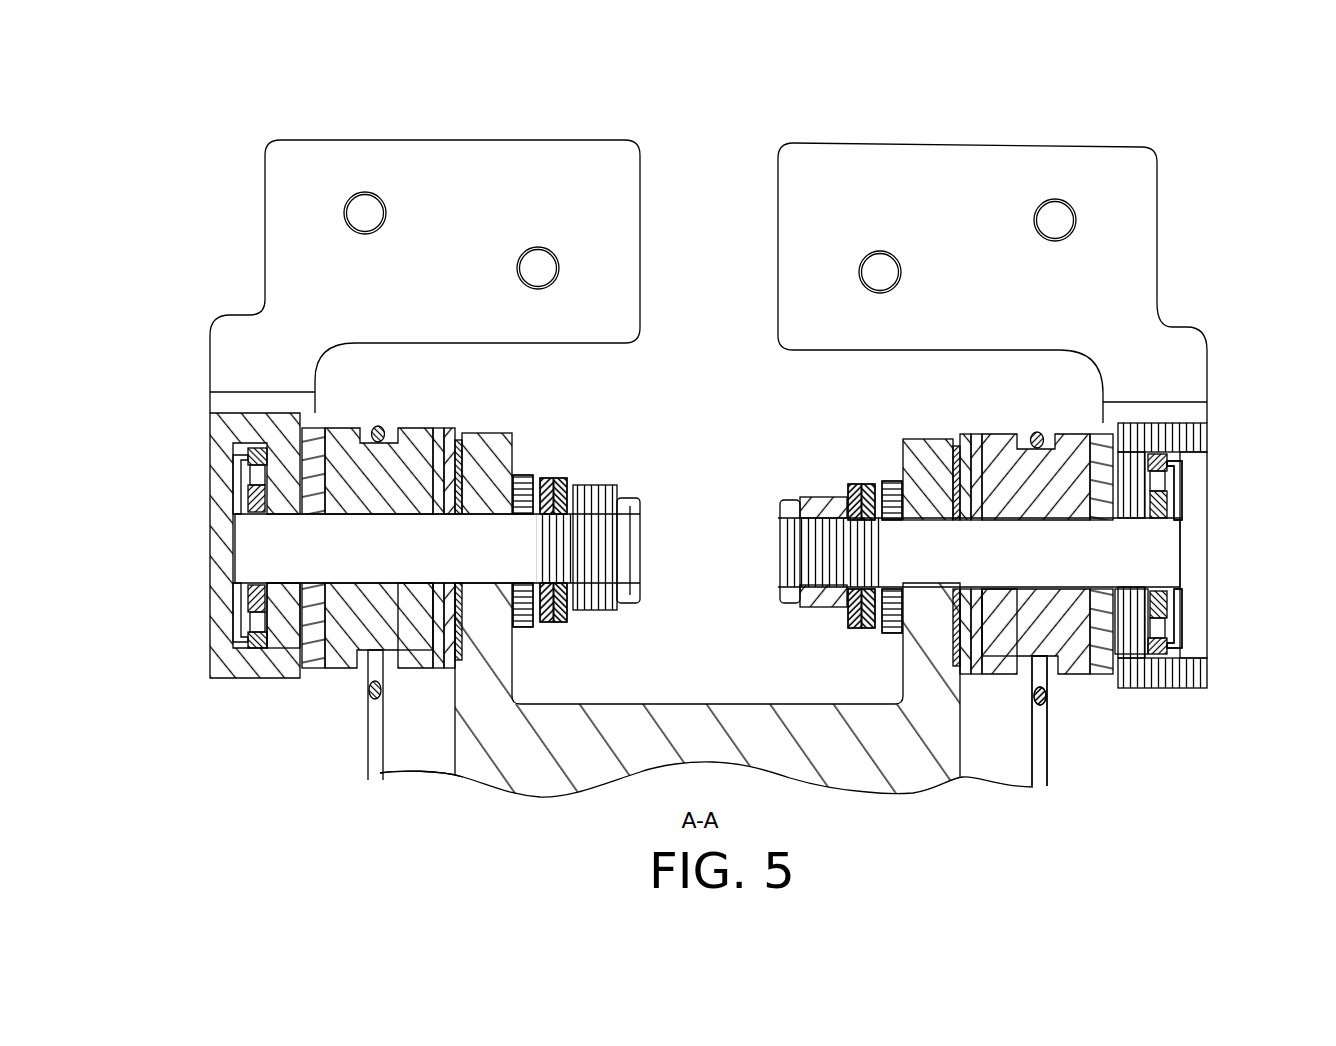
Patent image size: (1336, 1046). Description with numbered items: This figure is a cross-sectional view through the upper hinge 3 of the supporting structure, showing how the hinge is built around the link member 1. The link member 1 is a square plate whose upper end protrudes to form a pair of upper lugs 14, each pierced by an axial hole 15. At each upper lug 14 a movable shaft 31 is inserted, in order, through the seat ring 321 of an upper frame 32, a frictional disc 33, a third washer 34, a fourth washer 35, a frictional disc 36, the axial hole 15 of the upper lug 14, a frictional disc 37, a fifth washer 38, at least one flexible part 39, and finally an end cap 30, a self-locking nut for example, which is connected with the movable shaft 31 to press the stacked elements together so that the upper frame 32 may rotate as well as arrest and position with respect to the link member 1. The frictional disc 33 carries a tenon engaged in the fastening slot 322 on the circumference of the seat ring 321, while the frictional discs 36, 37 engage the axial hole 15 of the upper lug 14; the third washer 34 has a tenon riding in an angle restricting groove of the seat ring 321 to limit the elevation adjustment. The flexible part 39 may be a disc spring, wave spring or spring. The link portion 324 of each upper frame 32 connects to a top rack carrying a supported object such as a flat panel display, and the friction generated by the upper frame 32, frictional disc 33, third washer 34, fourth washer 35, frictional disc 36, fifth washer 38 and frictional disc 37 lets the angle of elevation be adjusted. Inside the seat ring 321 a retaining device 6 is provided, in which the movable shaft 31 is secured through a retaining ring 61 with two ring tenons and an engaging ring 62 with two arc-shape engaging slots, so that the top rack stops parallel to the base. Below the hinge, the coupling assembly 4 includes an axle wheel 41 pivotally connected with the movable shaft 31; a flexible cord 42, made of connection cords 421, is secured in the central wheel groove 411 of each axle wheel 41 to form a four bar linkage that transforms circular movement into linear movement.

The link member 1 is at (640, 762).
The upper hinge 3 is at (677, 602).
The coupling assembly 4 is at (1079, 736).
The retaining device 6 is at (1223, 629).
The upper lug 14 is at (488, 690).
The axial hole 15 is at (278, 582).
The end cap 30 is at (628, 490).
The movable shaft 31 is at (240, 545).
The upper frame 32 is at (450, 138).
The frictional disc 33 is at (315, 428).
The third washer 34 is at (308, 668).
The fourth washer 35 is at (444, 430).
The frictional disc 36 is at (472, 438).
The frictional disc 37 is at (522, 475).
The fifth washer 38 is at (527, 624).
The flexible part 39 is at (558, 477).
The axle wheel 41 is at (420, 650).
The flexible cord 42 is at (363, 672).
The retaining ring 61 is at (240, 488).
The engaging ring 62 is at (253, 595).
The seat ring 321 is at (260, 680).
The fastening slot 322 is at (263, 643).
The link portion 324 is at (343, 180).
The central wheel groove 411 is at (383, 430).
The connection cord 421 is at (1040, 770).